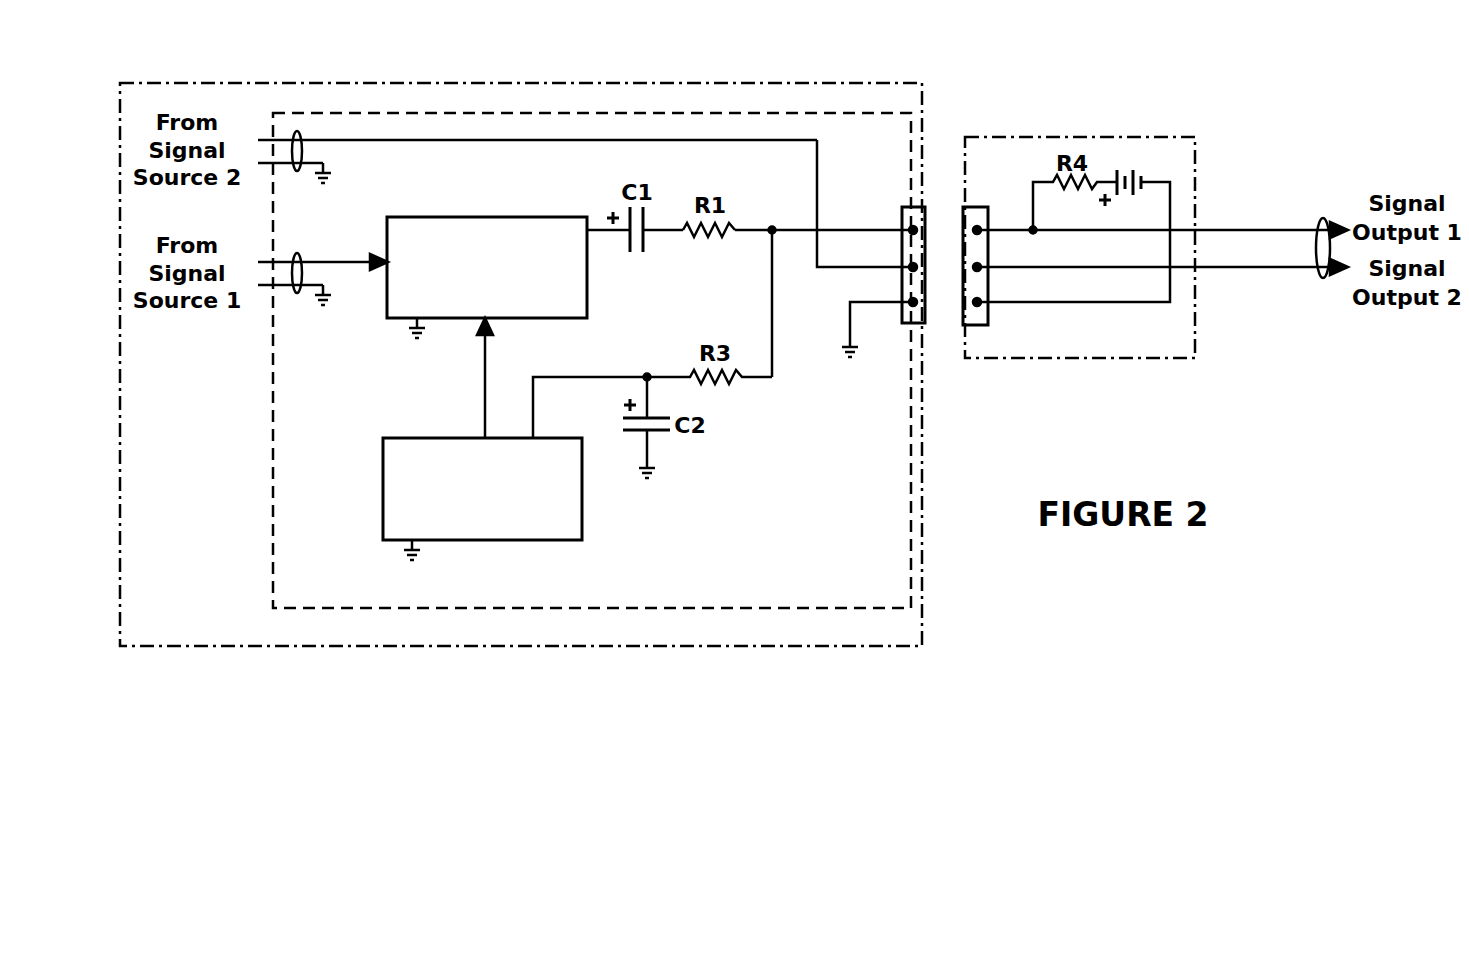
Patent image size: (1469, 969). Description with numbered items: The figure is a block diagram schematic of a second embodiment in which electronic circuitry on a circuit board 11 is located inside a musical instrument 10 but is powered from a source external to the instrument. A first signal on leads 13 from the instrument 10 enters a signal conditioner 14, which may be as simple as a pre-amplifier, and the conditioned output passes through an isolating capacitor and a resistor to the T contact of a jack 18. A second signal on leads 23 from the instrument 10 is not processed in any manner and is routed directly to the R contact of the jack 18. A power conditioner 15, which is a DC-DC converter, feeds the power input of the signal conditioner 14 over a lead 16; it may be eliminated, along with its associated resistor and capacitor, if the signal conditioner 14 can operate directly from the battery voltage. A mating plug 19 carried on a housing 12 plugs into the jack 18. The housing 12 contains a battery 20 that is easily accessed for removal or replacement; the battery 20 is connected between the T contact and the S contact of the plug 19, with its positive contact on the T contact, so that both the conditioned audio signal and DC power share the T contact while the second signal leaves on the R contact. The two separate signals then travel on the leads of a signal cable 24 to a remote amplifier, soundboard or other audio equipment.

The musical instrument 10 is at (131, 634).
The circuit board 11 is at (862, 592).
The housing 12 is at (1137, 349).
The leads 13 is at (300, 256).
The signal conditioner 14 is at (488, 214).
The power conditioner 15 is at (418, 434).
The lead 16 is at (478, 408).
The jack 18 is at (908, 206).
The plug 19 is at (972, 206).
The battery 20 is at (1142, 173).
The leads 23 is at (302, 150).
The signal cable 24 is at (1323, 278).